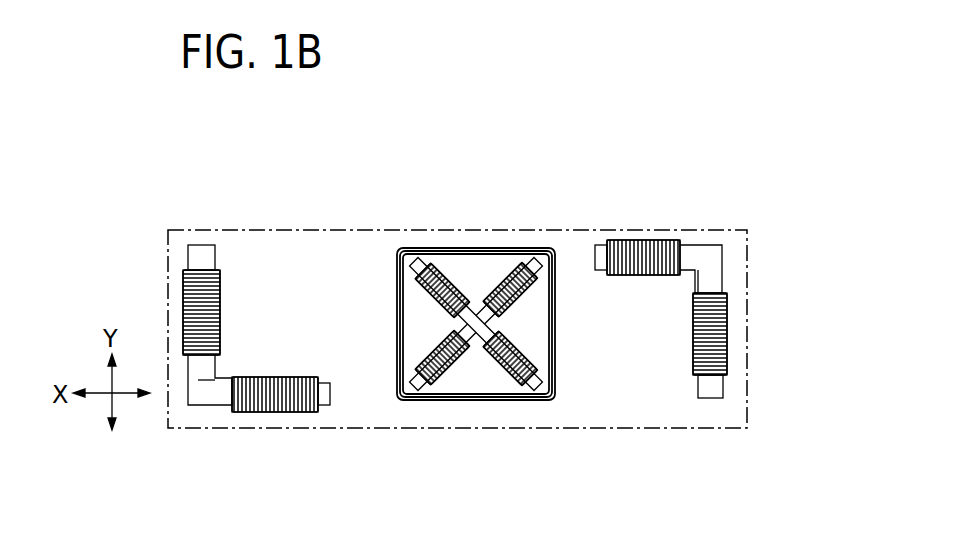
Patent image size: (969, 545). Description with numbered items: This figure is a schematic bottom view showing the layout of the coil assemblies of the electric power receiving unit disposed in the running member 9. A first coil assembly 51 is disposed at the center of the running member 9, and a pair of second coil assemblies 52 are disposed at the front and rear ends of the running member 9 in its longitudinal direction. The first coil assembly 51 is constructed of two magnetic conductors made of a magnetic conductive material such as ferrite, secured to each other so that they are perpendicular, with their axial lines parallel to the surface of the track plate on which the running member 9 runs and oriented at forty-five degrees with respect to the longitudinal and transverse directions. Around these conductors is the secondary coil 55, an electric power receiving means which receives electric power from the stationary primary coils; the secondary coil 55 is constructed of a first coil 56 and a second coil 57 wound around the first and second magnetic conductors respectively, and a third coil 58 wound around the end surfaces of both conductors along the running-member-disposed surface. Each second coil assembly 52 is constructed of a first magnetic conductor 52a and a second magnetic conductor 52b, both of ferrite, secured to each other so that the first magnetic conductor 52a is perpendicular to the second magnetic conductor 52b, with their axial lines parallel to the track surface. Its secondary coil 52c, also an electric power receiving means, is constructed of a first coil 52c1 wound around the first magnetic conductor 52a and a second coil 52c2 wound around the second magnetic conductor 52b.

The running member 9 is at (702, 230).
The first coil assembly 51 is at (389, 247).
The second coil assembly 52 is at (447, 327).
The first magnetic conductor 52a is at (207, 400).
The second magnetic conductor 52b is at (197, 258).
The secondary coil 52c is at (455, 326).
The first coil 52c1 is at (222, 312).
The second coil 52c2 is at (275, 378).
The secondary coil 55 is at (472, 383).
The first coil 56 is at (438, 400).
The second coil 57 is at (395, 474).
The third coil 58 is at (470, 400).